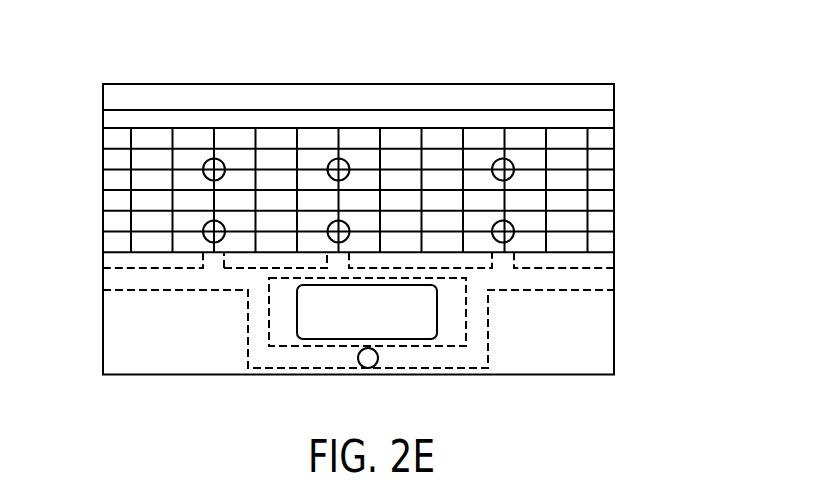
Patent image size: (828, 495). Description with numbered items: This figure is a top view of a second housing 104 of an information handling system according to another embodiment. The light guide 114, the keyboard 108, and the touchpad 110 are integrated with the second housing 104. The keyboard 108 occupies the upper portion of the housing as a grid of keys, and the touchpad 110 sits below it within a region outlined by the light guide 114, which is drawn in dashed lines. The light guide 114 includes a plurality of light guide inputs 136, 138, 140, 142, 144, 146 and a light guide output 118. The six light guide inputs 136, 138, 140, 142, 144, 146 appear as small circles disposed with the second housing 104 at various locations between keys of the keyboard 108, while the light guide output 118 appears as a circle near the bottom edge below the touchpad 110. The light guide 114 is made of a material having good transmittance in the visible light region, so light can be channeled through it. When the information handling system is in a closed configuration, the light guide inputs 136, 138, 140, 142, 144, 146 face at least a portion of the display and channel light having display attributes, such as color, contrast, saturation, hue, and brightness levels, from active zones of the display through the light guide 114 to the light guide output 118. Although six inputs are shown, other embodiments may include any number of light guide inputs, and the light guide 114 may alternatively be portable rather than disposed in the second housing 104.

The second housing 104 is at (616, 117).
The keyboard 108 is at (603, 200).
The touchpad 110 is at (297, 312).
The light guide 114 is at (488, 342).
The light guide output 118 is at (370, 369).
The light guide input 136 is at (208, 241).
The light guide input 138 is at (206, 159).
The light guide input 140 is at (331, 159).
The light guide input 142 is at (345, 221).
The light guide input 144 is at (497, 159).
The light guide input 146 is at (513, 237).